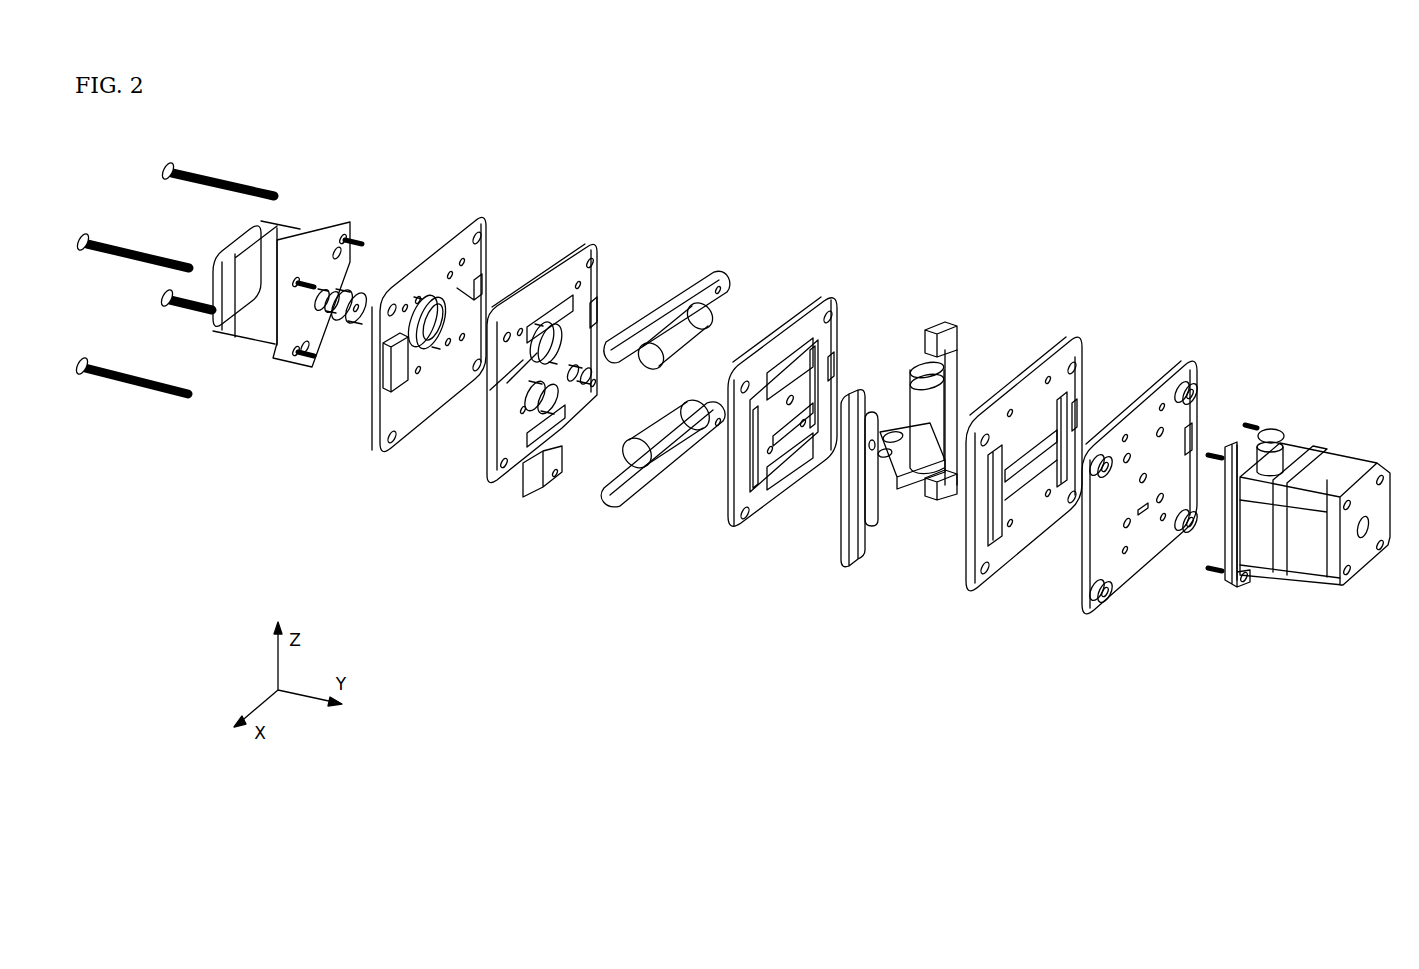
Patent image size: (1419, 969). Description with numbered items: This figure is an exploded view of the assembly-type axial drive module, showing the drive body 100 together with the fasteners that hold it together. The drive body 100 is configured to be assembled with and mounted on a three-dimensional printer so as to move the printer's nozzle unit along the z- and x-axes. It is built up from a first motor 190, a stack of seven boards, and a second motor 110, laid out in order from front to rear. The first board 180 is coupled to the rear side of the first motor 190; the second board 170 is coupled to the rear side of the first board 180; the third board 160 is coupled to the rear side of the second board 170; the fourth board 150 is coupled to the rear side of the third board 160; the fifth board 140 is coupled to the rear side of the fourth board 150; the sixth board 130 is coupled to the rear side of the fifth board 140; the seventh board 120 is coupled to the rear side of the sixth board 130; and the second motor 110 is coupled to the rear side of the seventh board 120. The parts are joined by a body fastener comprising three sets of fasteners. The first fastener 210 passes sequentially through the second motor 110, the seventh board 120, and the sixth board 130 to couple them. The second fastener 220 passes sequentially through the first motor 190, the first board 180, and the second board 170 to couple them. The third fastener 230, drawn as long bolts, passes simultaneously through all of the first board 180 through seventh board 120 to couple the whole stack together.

The drive body 100 is at (258, 493).
The second motor 110 is at (1310, 564).
The seventh board 120 is at (1128, 568).
The sixth board 130 is at (1003, 550).
The fifth board 140 is at (845, 565).
The fourth board 150 is at (724, 528).
The third board 160 is at (612, 505).
The second board 170 is at (497, 478).
The first board 180 is at (372, 452).
The first motor 190 is at (271, 382).
The first fastener 210 is at (1252, 420).
The second fastener 220 is at (360, 248).
The third fastener 230 is at (207, 193).